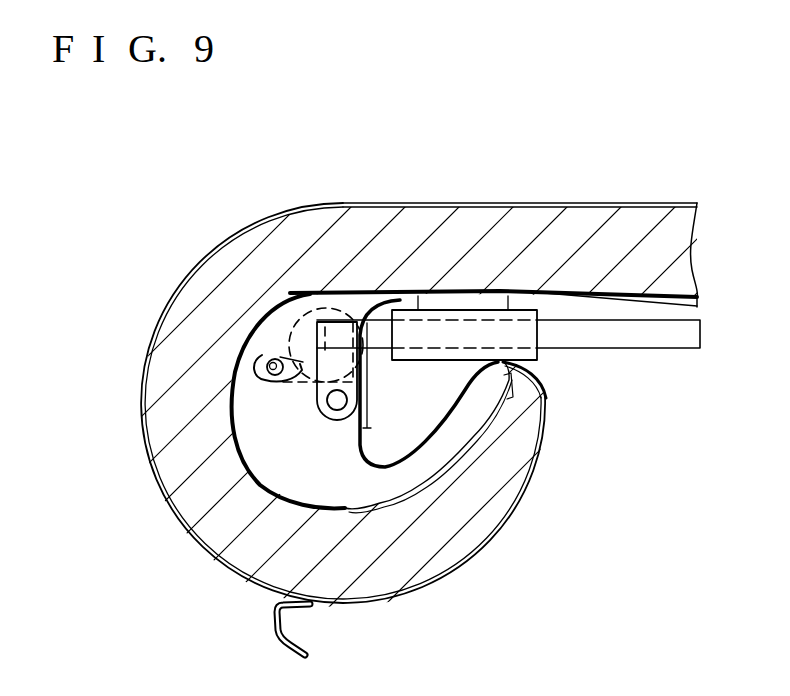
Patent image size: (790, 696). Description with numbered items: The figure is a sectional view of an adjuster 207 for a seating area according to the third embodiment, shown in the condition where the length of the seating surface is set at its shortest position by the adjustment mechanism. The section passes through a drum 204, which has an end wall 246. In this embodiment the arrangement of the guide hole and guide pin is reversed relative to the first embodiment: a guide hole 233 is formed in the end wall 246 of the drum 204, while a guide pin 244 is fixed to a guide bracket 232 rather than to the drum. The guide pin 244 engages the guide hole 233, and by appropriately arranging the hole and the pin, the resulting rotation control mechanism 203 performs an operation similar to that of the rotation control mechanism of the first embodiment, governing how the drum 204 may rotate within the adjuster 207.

The adjuster 207 is at (388, 153).
The rotation control mechanism 203 is at (273, 359).
The drum 204 is at (236, 428).
The guide bracket 232 is at (302, 336).
The guide hole 233 is at (290, 332).
The guide pin 244 is at (266, 363).
The end wall 246 is at (293, 392).